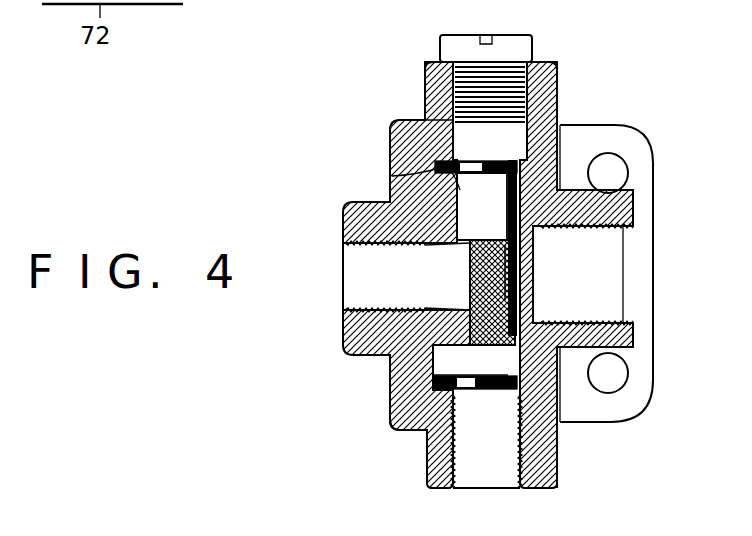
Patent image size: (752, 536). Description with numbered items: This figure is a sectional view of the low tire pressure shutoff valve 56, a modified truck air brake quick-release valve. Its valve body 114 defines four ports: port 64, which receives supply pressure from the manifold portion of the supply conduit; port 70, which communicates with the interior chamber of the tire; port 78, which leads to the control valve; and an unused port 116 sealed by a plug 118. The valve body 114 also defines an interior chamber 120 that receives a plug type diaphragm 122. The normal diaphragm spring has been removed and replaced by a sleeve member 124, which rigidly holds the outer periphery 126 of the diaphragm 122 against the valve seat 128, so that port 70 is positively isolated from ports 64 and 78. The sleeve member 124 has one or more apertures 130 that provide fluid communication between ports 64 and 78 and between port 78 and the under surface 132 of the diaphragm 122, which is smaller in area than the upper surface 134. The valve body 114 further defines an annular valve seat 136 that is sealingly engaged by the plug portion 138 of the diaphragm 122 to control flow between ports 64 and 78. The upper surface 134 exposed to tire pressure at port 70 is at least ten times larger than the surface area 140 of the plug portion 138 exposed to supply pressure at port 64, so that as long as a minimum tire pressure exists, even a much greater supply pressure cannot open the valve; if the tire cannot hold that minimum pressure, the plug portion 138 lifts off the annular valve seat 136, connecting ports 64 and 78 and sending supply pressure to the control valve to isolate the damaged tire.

The low tire pressure shutoff valve 56 is at (586, 103).
The port 64 is at (350, 292).
The port 70 is at (607, 279).
The port 78 is at (475, 470).
The valve body 114 is at (404, 124).
The unused port 116 is at (500, 145).
The plug 118 is at (512, 83).
The interior chamber 120 is at (527, 212).
The plug type diaphragm 122 is at (507, 307).
The sleeve member 124 is at (398, 163).
The outer periphery 126 is at (508, 398).
The valve seat 128 is at (555, 438).
The apertures 130 is at (392, 176).
The under surface 132 is at (476, 248).
The upper surface 134 is at (512, 353).
The annular valve seat 136 is at (470, 257).
The plug portion 138 is at (505, 250).
The surface area 140 is at (470, 285).